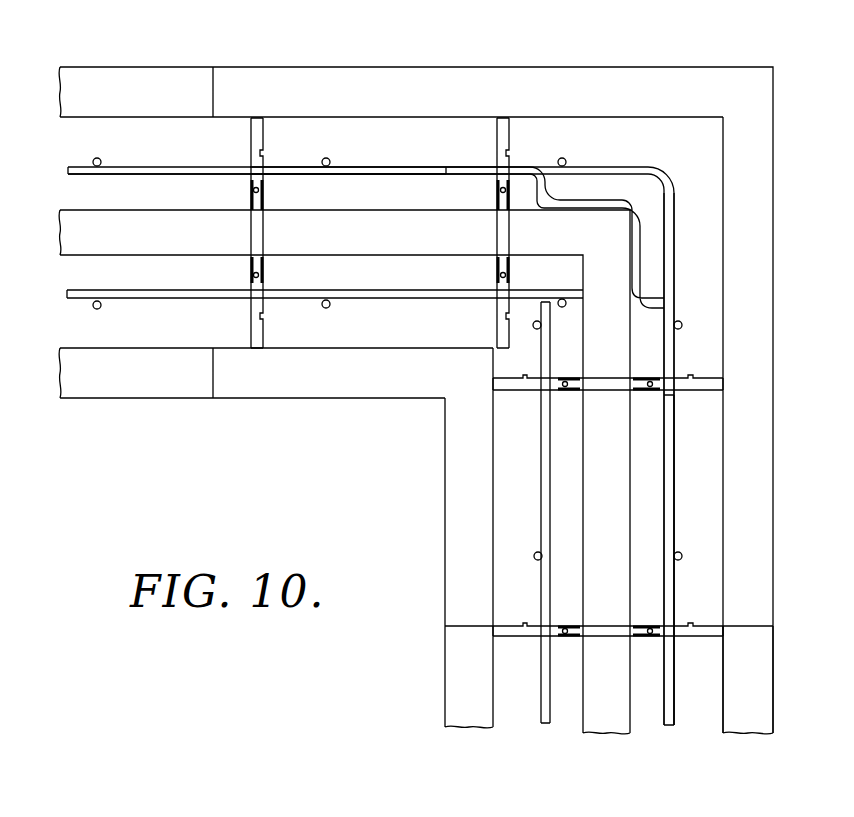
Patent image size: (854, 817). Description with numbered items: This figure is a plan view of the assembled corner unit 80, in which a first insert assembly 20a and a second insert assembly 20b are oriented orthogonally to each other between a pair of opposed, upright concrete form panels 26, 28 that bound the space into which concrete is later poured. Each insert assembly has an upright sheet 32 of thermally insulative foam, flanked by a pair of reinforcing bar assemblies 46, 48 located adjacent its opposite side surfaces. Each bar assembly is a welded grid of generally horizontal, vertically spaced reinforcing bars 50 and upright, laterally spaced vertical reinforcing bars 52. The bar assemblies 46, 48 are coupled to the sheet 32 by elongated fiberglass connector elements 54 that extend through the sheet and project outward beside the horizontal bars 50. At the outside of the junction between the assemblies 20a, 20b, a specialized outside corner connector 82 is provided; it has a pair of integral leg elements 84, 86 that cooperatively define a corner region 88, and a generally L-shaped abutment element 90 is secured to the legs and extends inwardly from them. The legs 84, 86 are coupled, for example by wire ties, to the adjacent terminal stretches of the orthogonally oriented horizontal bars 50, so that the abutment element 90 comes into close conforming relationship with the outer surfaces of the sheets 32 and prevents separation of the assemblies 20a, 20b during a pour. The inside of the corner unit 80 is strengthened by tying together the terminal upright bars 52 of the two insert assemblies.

The first insert assembly 20a is at (690, 737).
The second insert assembly 20b is at (127, 320).
The concrete form panel 26 is at (146, 382).
The concrete form panel 28 is at (135, 83).
The sheet 32 is at (413, 258).
The reinforcing bar assembly 46 is at (82, 305).
The reinforcing bar assembly 48 is at (82, 161).
The horizontally extending reinforcing bar 50 is at (205, 171).
The vertical reinforcing bar 52 is at (326, 158).
The connector element 54 is at (272, 318).
The corner unit 80 is at (688, 173).
The outside corner connector 82 is at (599, 157).
The leg element 84 is at (348, 172).
The leg element 86 is at (668, 498).
The corner region 88 is at (680, 196).
The abutment element 90 is at (632, 240).